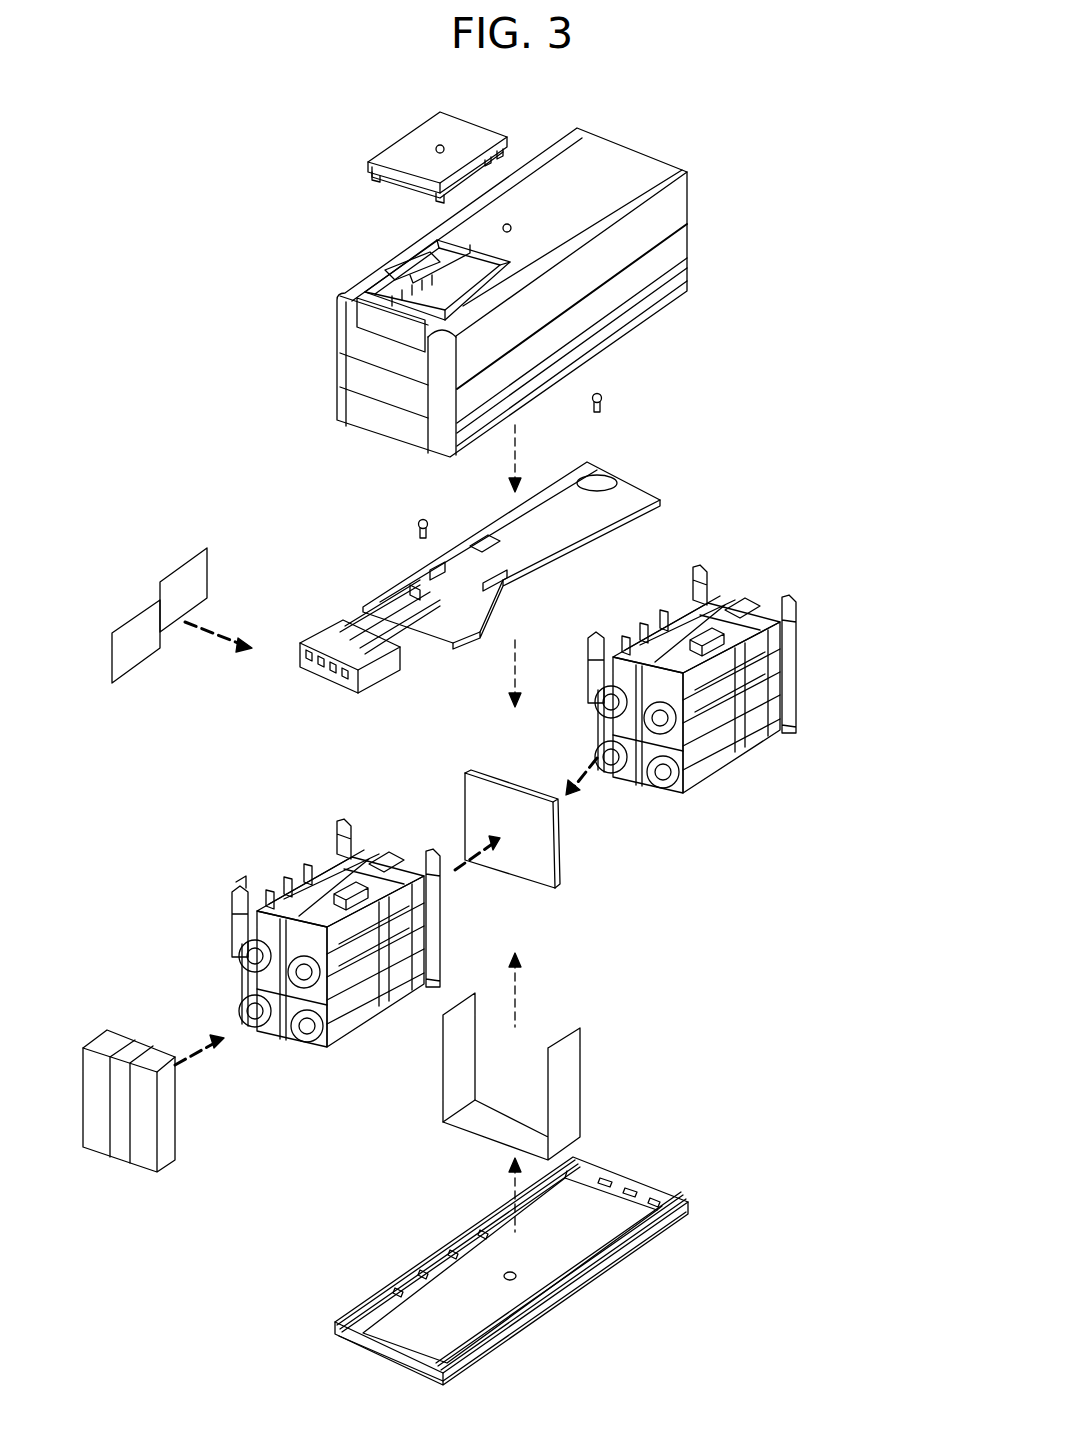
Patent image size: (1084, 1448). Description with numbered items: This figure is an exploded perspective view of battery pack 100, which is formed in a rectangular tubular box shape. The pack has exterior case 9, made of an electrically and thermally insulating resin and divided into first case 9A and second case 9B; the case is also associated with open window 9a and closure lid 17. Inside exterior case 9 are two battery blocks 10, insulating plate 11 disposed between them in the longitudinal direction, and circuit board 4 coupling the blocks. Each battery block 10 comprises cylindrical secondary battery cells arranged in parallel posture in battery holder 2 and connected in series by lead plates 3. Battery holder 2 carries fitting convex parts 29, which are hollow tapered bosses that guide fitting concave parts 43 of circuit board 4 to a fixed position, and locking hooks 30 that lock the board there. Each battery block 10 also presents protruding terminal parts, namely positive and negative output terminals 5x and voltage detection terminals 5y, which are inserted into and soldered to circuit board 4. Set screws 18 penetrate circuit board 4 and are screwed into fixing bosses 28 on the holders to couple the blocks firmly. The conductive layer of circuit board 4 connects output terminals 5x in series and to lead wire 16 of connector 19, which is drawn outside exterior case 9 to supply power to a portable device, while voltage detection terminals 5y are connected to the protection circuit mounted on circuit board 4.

The battery pack 100 is at (740, 178).
The exterior case 9 is at (875, 433).
The first case 9A is at (697, 320).
The second case 9B is at (665, 1140).
The open window 9a is at (397, 253).
The closure lid 17 is at (415, 142).
The set screw 18 is at (603, 393).
The fitting concave part 43 is at (463, 537).
The lead wire 16 is at (403, 593).
The circuit board 4 is at (437, 623).
The connector 19 is at (320, 610).
The battery block 10 is at (757, 770).
The lead plate 3 is at (592, 700).
The battery holder 2 is at (710, 733).
The fitting convex part 29 is at (707, 572).
The locking hook 30 is at (236, 888).
The voltage detection terminal 5y is at (690, 588).
The output terminal 5x is at (792, 598).
The fixing boss 28 is at (737, 607).
The insulating plate 11 is at (517, 867).